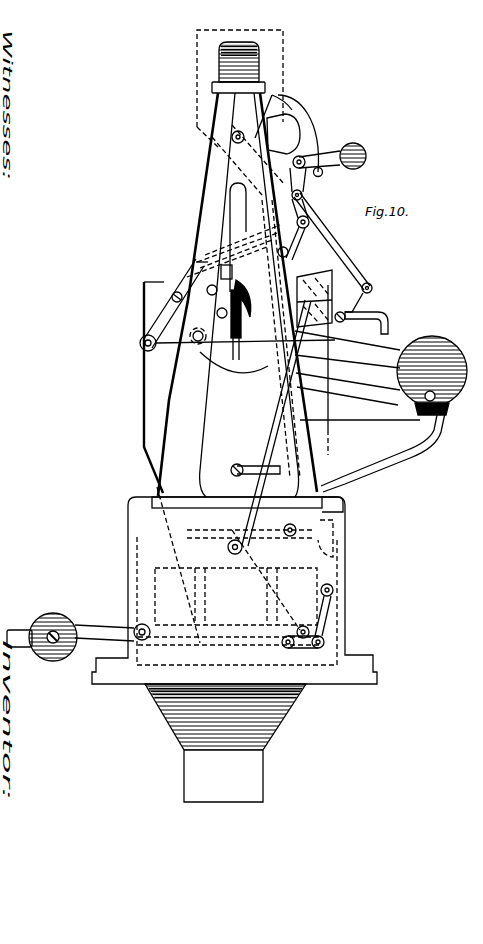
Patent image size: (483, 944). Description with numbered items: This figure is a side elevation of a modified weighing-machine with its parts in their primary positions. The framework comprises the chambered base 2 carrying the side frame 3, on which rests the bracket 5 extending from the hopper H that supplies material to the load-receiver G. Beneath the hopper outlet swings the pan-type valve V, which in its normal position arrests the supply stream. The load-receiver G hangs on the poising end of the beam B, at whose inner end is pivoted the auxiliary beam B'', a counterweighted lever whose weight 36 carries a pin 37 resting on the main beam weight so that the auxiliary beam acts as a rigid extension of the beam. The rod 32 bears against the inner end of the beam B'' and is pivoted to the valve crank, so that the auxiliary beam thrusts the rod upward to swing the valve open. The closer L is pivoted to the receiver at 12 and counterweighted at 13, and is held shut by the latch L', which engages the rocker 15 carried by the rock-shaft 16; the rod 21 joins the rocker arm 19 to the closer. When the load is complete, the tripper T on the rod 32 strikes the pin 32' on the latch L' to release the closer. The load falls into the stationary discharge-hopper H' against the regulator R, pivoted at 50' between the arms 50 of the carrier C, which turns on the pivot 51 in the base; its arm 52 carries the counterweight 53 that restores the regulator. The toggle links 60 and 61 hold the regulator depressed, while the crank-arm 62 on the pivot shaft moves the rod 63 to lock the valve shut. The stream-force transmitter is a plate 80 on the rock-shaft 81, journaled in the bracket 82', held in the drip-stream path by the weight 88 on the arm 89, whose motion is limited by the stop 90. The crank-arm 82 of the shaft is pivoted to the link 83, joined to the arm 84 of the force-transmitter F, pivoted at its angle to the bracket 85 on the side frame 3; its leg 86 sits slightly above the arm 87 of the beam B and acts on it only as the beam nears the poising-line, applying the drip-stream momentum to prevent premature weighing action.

The bracket 5 is at (219, 57).
The hopper H is at (224, 88).
The swinging valve V is at (298, 127).
The side frame 3 is at (206, 184).
The plate 80 is at (245, 188).
The rocker 15 is at (216, 208).
The latch L' is at (223, 251).
The tripper T is at (196, 268).
The rod 32 is at (223, 316).
The pin 32' is at (152, 284).
The load-receiver G is at (150, 376).
The rock-shaft 81 is at (318, 145).
The arm 89 is at (331, 155).
The weight 88 is at (366, 156).
The stop 90 is at (322, 174).
The bracket 82' is at (306, 126).
The crank-arm 82 is at (313, 187).
The arm of the rocker 19 is at (310, 223).
The rock-shaft 16 is at (289, 251).
The link 83 is at (350, 263).
The arm of the force-transmitter 84 is at (368, 283).
The force-transmitter F is at (362, 302).
The bracket 85 is at (338, 312).
The leg 86 is at (389, 322).
The arm of the beam 87 is at (352, 347).
The beam B is at (349, 370).
The auxiliary beam B'' is at (358, 389).
The weight 36 is at (445, 350).
The pin 37 is at (430, 391).
The rod 21 is at (262, 441).
The base 2 is at (336, 563).
The discharge-hopper H' is at (236, 585).
The closer L is at (250, 524).
The regulator R is at (229, 650).
The pivot 12 is at (285, 528).
The counterweight 13 is at (308, 540).
The rod 63 is at (297, 556).
The crank-arm 62 is at (247, 623).
The link 61 is at (333, 610).
The arms 50 is at (153, 643).
The pivot 50' is at (278, 649).
The link 60 is at (306, 650).
The carrier C is at (104, 624).
The counterweight 53 is at (52, 618).
The arm 52 is at (17, 630).
The pivot 51 is at (138, 635).